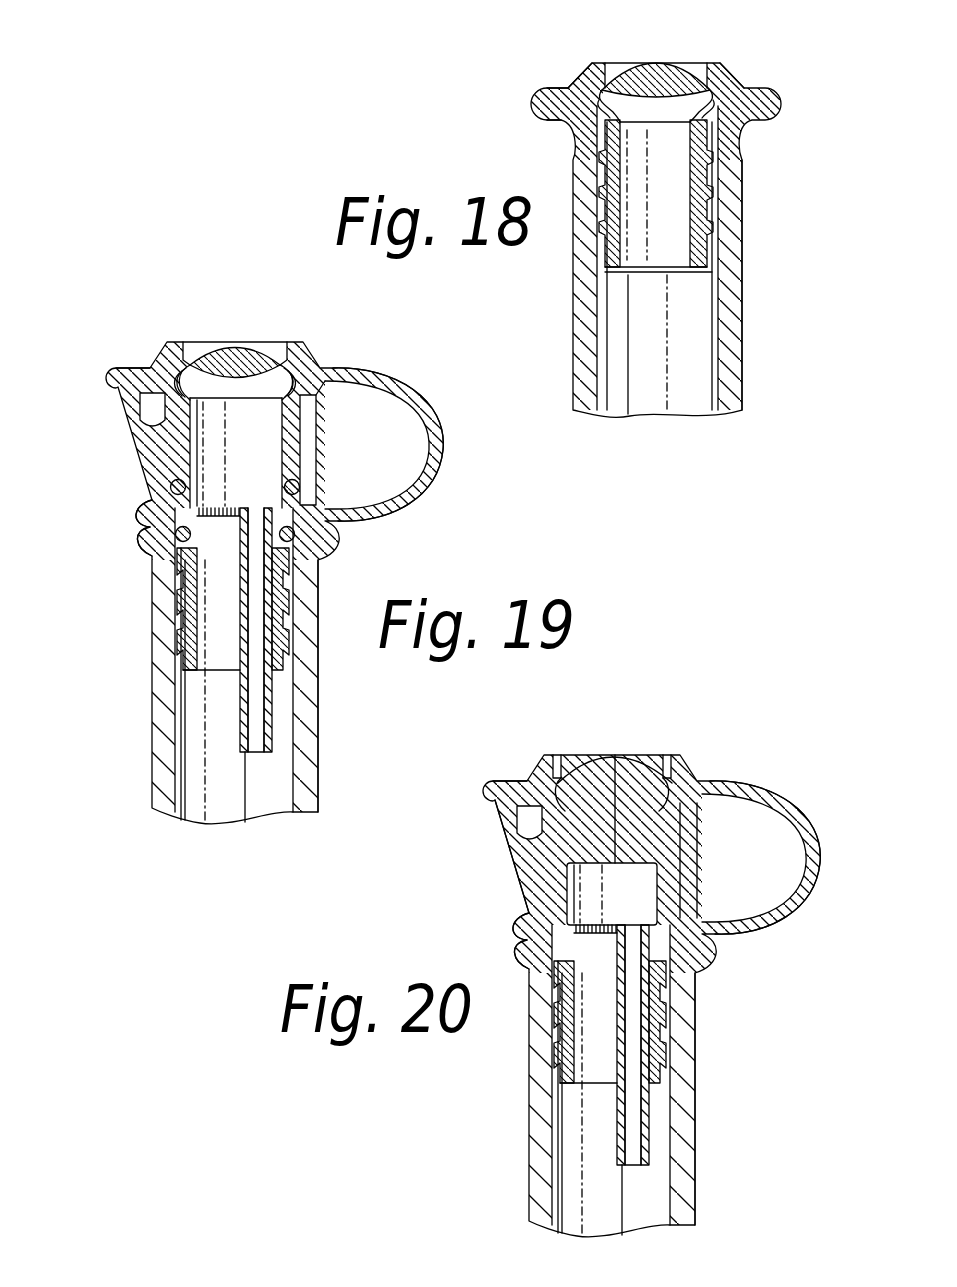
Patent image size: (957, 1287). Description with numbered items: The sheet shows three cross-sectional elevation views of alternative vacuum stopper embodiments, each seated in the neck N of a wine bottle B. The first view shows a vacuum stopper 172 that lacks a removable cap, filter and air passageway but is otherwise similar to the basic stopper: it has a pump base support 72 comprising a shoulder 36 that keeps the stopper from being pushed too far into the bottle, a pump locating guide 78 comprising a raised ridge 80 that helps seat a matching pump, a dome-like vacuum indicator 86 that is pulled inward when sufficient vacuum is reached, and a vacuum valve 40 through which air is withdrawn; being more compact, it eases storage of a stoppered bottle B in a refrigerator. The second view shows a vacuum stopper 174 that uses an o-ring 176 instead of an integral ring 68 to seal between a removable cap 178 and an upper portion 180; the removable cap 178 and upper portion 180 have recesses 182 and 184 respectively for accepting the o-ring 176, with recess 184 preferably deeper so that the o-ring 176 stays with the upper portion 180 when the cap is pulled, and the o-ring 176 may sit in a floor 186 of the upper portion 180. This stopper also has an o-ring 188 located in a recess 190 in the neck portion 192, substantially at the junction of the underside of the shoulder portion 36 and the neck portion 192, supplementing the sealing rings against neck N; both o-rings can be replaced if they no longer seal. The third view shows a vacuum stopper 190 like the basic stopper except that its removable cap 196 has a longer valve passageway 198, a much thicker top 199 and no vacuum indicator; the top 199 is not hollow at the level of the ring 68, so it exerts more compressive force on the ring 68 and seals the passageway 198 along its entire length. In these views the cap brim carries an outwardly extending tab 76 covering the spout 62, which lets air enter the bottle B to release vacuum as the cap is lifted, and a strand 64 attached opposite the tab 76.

In FIG. 18, the shoulder portion 36 is at (532, 105).
In FIG. 19, the shoulder portion 36 is at (140, 518).
In FIG. 20, the shoulder portion 36 is at (515, 937).
In FIG. 18, the vacuum valve 40 is at (660, 92).
In FIG. 20, the spout 62 is at (508, 858).
In FIG. 19, the strand 64 is at (446, 442).
In FIG. 20, the strand 64 is at (780, 805).
In FIG. 20, the sealing ring 68 is at (660, 868).
In FIG. 18, the pump base support 72 is at (556, 98).
In FIG. 19, the tab 76 is at (104, 370).
In FIG. 20, the tab 76 is at (482, 793).
In FIG. 18, the pump locating guide 78 is at (585, 84).
In FIG. 18, the raised ridge 80 is at (722, 68).
In FIG. 18, the vacuum indicator 86 is at (645, 60).
In FIG. 18, the vacuum stopper 172 is at (765, 62).
In FIG. 19, the vacuum stopper 174 is at (340, 333).
In FIG. 19, the o-ring 176 is at (168, 487).
In FIG. 19, the removable cap 178 is at (195, 342).
In FIG. 19, the upper portion 180 is at (322, 440).
In FIG. 19, the recess 182 is at (226, 490).
In FIG. 19, the recess 184 is at (322, 484).
In FIG. 19, the floor 186 is at (284, 487).
In FIG. 19, the o-ring 188 is at (296, 533).
In FIG. 19, the recess 190 is at (326, 560).
In FIG. 20, the recess 190 is at (688, 708).
In FIG. 19, the neck portion 192 is at (178, 580).
In FIG. 20, the removable cap 196 is at (572, 755).
In FIG. 20, the valve passageway 198 is at (617, 813).
In FIG. 20, the top 199 is at (648, 767).
In FIG. 18, the neck N is at (742, 238).
In FIG. 19, the neck N is at (320, 700).
In FIG. 20, the neck N is at (697, 1010).
In FIG. 18, the wine bottle B is at (760, 318).
In FIG. 19, the wine bottle B is at (340, 775).
In FIG. 20, the wine bottle B is at (715, 1088).